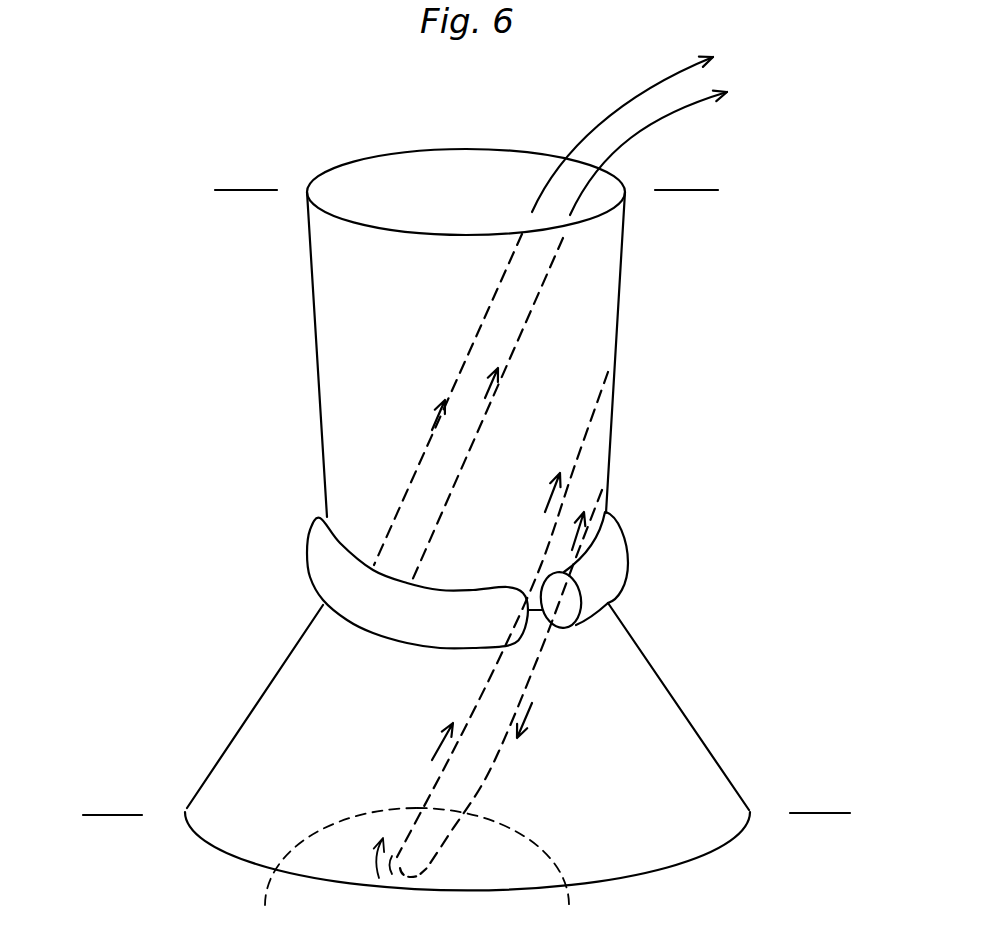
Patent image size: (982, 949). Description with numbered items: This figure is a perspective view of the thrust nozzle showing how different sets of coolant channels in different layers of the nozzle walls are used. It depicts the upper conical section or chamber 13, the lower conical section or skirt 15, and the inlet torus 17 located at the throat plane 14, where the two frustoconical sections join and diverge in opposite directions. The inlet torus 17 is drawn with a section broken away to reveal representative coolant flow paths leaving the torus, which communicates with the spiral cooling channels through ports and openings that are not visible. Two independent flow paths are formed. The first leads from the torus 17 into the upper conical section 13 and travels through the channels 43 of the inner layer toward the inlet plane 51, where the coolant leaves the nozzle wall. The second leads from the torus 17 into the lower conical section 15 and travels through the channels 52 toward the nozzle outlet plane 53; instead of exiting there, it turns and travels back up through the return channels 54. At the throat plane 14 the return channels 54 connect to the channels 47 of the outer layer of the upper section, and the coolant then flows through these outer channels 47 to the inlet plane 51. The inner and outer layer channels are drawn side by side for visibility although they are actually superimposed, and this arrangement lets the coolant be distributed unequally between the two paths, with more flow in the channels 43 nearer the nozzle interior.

The nozzle chamber 13 is at (318, 397).
The throat 14 is at (743, 581).
The skirt 15 is at (245, 715).
The inlet torus 17 is at (625, 562).
The inner layer channels 43 is at (538, 307).
The outer layer channels 47 is at (480, 330).
The inlet plane 51 is at (484, 190).
The channels of the lower conical section 52 is at (502, 872).
The nozzle outlet plane 53 is at (450, 817).
The return channels 54 is at (330, 870).